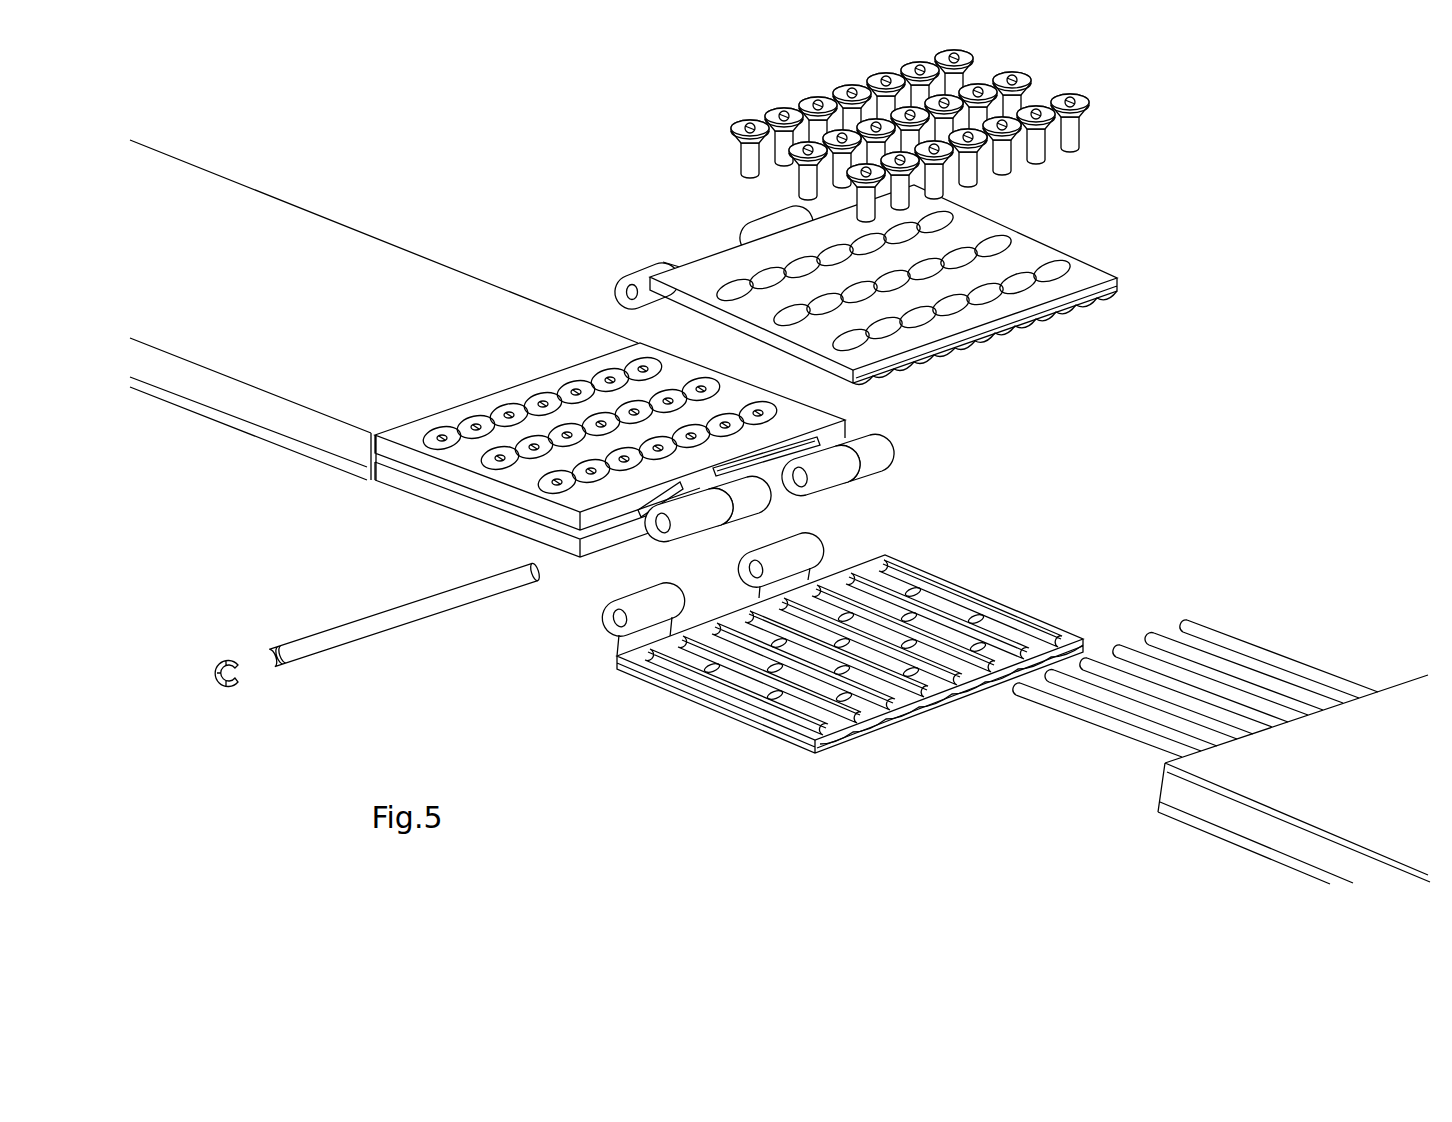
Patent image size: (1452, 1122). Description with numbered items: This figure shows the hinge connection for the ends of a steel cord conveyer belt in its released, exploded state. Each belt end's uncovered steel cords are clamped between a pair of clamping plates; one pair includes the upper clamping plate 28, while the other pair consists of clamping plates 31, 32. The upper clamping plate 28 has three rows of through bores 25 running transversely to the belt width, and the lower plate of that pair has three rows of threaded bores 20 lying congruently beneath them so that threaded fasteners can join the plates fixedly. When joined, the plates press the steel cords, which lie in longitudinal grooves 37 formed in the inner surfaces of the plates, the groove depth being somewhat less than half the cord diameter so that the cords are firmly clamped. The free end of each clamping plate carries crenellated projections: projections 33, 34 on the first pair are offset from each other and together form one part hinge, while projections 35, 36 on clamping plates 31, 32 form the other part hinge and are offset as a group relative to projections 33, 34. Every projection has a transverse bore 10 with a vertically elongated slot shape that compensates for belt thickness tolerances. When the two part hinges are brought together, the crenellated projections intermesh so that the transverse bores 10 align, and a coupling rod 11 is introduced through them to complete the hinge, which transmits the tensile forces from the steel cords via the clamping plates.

The transverse bore 10 is at (632, 293).
The coupling rod 11 is at (370, 630).
The threaded bores 20 is at (800, 689).
The through bores 25 is at (992, 245).
The upper clamping plate 28 is at (889, 252).
The clamping plate 31 is at (435, 470).
The clamping plate 32 is at (478, 512).
The crenellated projection 33 is at (658, 266).
The crenellated projection 34 is at (605, 620).
The crenellated projection 35 is at (863, 458).
The crenellated projection 36 is at (832, 470).
The longitudinal grooves 37 is at (1003, 332).